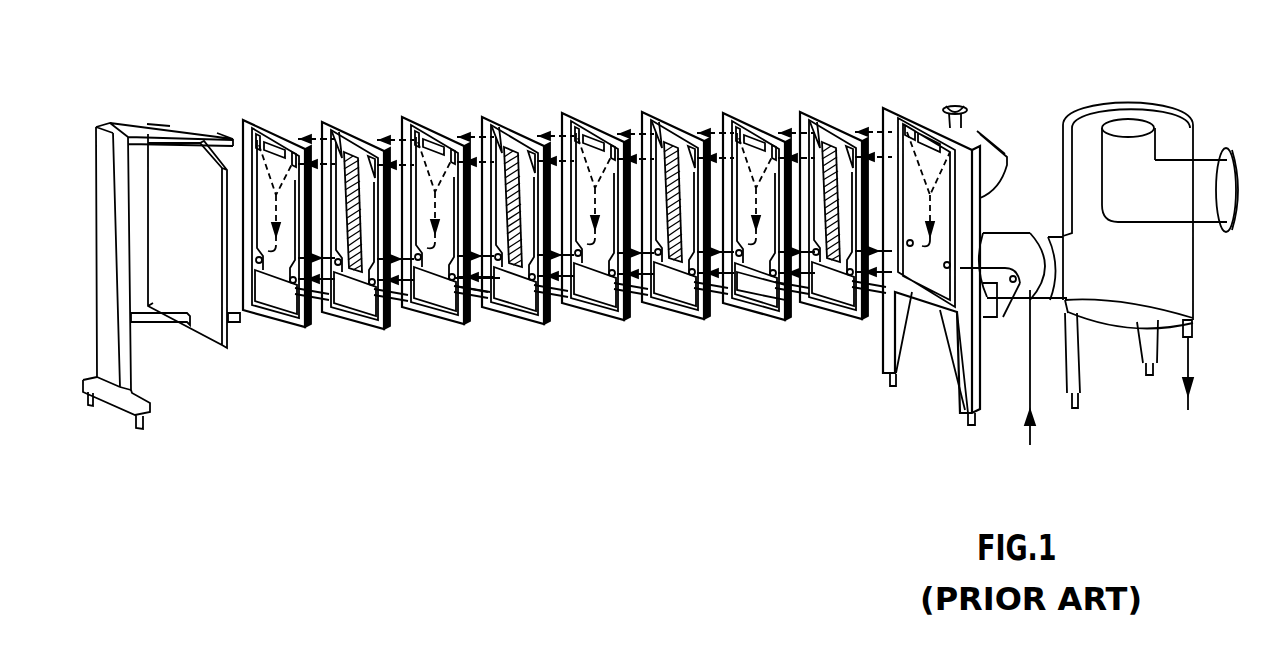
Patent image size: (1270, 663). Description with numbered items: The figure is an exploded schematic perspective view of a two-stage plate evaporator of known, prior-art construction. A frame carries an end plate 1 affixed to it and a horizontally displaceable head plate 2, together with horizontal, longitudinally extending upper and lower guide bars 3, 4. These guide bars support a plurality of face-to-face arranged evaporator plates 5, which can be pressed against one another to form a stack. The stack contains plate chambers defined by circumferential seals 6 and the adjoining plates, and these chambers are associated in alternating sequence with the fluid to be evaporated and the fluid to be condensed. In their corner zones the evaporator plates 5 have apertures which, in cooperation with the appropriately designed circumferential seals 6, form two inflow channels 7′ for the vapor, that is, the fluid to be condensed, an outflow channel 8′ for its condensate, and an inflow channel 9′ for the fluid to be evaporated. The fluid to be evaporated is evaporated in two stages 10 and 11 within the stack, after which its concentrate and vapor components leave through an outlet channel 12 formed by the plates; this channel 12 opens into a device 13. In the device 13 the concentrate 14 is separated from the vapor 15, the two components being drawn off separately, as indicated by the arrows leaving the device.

The end plate 1 is at (888, 110).
The head plate 2 is at (188, 150).
The upper guide bar 3 is at (133, 124).
The lower guide bar 4 is at (177, 323).
The evaporator plate 5 is at (482, 114).
The circumferential seal 6 is at (700, 310).
The inflow channel for vapor 7′ is at (530, 158).
The outflow channel for condensate 8′ is at (580, 300).
The inflow channel for fluid to be evaporated 9′ is at (470, 285).
The first evaporation stage 10 is at (668, 300).
The second evaporation stage 11 is at (835, 150).
The spacer 12 is at (725, 292).
The separating device 13 is at (1086, 108).
The concentrate 14 is at (1188, 398).
The vapor 15 is at (1255, 186).